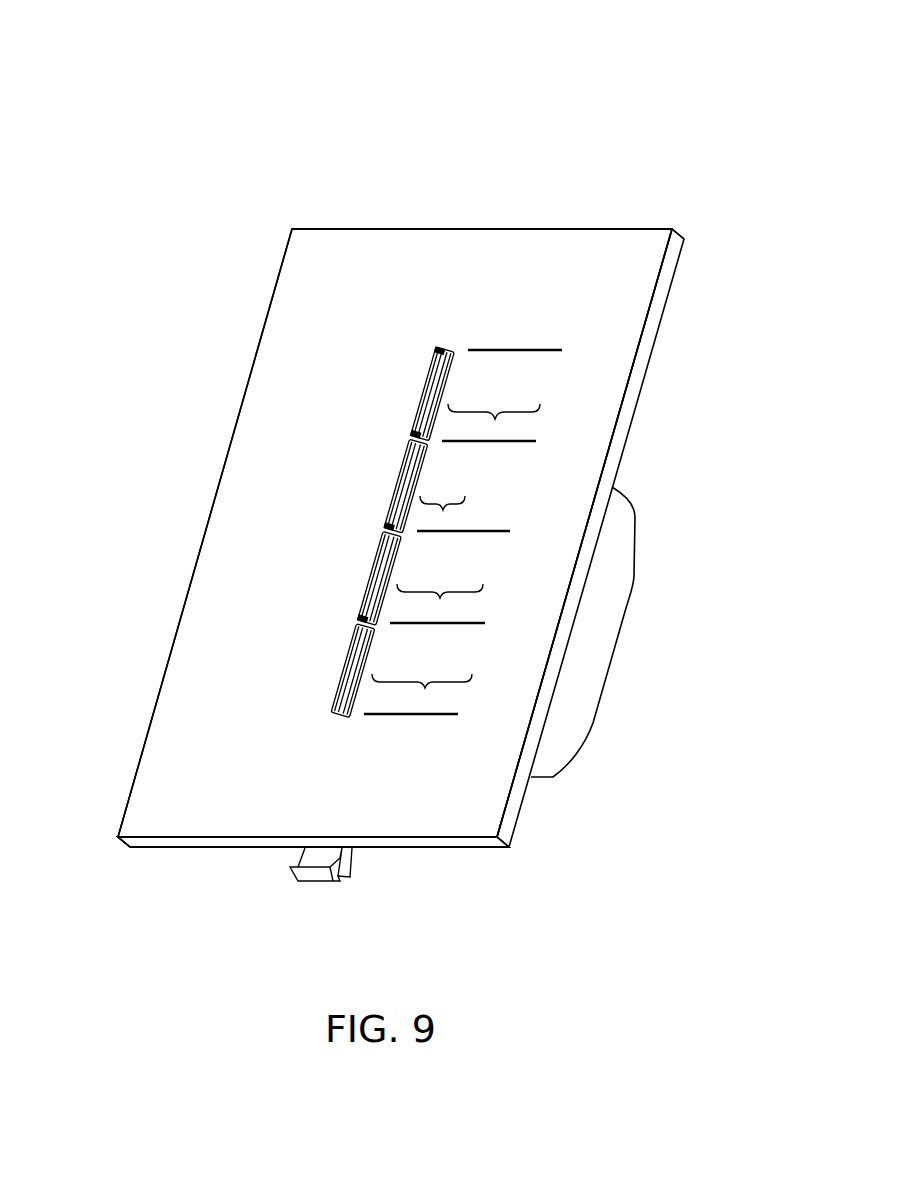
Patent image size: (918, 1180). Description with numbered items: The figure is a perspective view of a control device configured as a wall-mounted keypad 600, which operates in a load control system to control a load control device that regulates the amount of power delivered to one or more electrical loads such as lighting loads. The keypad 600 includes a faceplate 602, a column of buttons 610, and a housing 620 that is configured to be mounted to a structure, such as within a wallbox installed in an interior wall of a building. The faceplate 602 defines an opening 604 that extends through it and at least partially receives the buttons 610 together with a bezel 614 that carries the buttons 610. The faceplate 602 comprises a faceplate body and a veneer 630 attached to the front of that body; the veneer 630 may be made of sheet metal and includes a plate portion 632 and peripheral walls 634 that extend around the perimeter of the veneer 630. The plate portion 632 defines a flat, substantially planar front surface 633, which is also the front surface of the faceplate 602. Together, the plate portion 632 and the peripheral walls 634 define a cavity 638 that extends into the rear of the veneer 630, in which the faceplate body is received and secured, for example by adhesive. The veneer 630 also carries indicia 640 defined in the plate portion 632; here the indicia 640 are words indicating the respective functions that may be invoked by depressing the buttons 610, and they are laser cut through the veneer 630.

The keypad 600 is at (104, 108).
The faceplate 602 is at (272, 297).
The opening 604 is at (455, 356).
The buttons 610 is at (423, 390).
The bezel 614 is at (342, 722).
The housing 620 is at (593, 723).
The veneer 630 is at (188, 776).
The plate portion 632 is at (532, 248).
The front surface 633 is at (623, 249).
The peripheral walls 634 is at (662, 298).
The cavity 638 is at (531, 838).
The indicia 640 is at (495, 415).